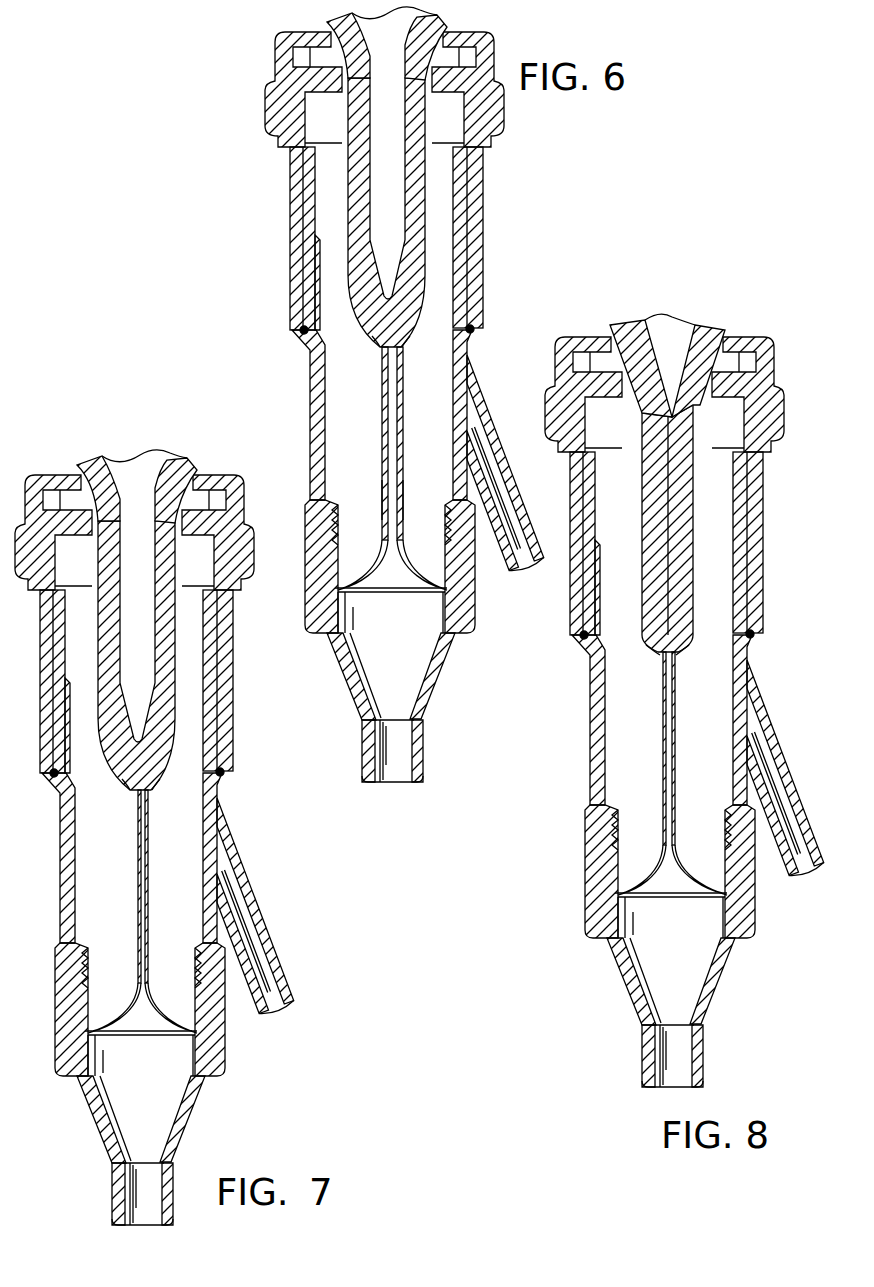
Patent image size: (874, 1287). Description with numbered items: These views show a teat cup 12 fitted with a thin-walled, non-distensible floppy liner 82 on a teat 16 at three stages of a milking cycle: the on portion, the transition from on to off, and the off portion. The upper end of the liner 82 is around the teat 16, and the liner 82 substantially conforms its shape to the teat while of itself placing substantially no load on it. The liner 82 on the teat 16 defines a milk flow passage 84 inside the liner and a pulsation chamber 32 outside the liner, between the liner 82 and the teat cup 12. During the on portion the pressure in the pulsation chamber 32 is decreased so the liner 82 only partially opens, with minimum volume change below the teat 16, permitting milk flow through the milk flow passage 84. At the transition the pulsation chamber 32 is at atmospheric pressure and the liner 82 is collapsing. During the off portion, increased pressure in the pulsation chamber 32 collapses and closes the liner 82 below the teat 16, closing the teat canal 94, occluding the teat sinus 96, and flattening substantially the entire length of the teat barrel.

In FIG. 6, the teat cup 12 is at (312, 403).
In FIG. 7, the teat cup 12 is at (130, 850).
In FIG. 8, the teat cup 12 is at (661, 712).
In FIG. 6, the teat 16 is at (327, 17).
In FIG. 7, the teat 16 is at (124, 465).
In FIG. 8, the teat 16 is at (661, 345).
In FIG. 6, the pulsation chamber 32 is at (435, 365).
In FIG. 7, the pulsation chamber 32 is at (241, 906).
In FIG. 8, the pulsation chamber 32 is at (769, 768).
In FIG. 6, the liner 82 is at (382, 455).
In FIG. 7, the liner 82 is at (142, 911).
In FIG. 8, the liner 82 is at (666, 773).
In FIG. 6, the milk flow passage 84 is at (397, 500).
In FIG. 6, the teat canal 94 is at (362, 333).
In FIG. 7, the teat canal 94 is at (124, 783).
In FIG. 8, the teat canal 94 is at (653, 666).
In FIG. 6, the teat sinus 96 is at (380, 200).
In FIG. 7, the teat sinus 96 is at (121, 655).
In FIG. 8, the teat sinus 96 is at (647, 528).